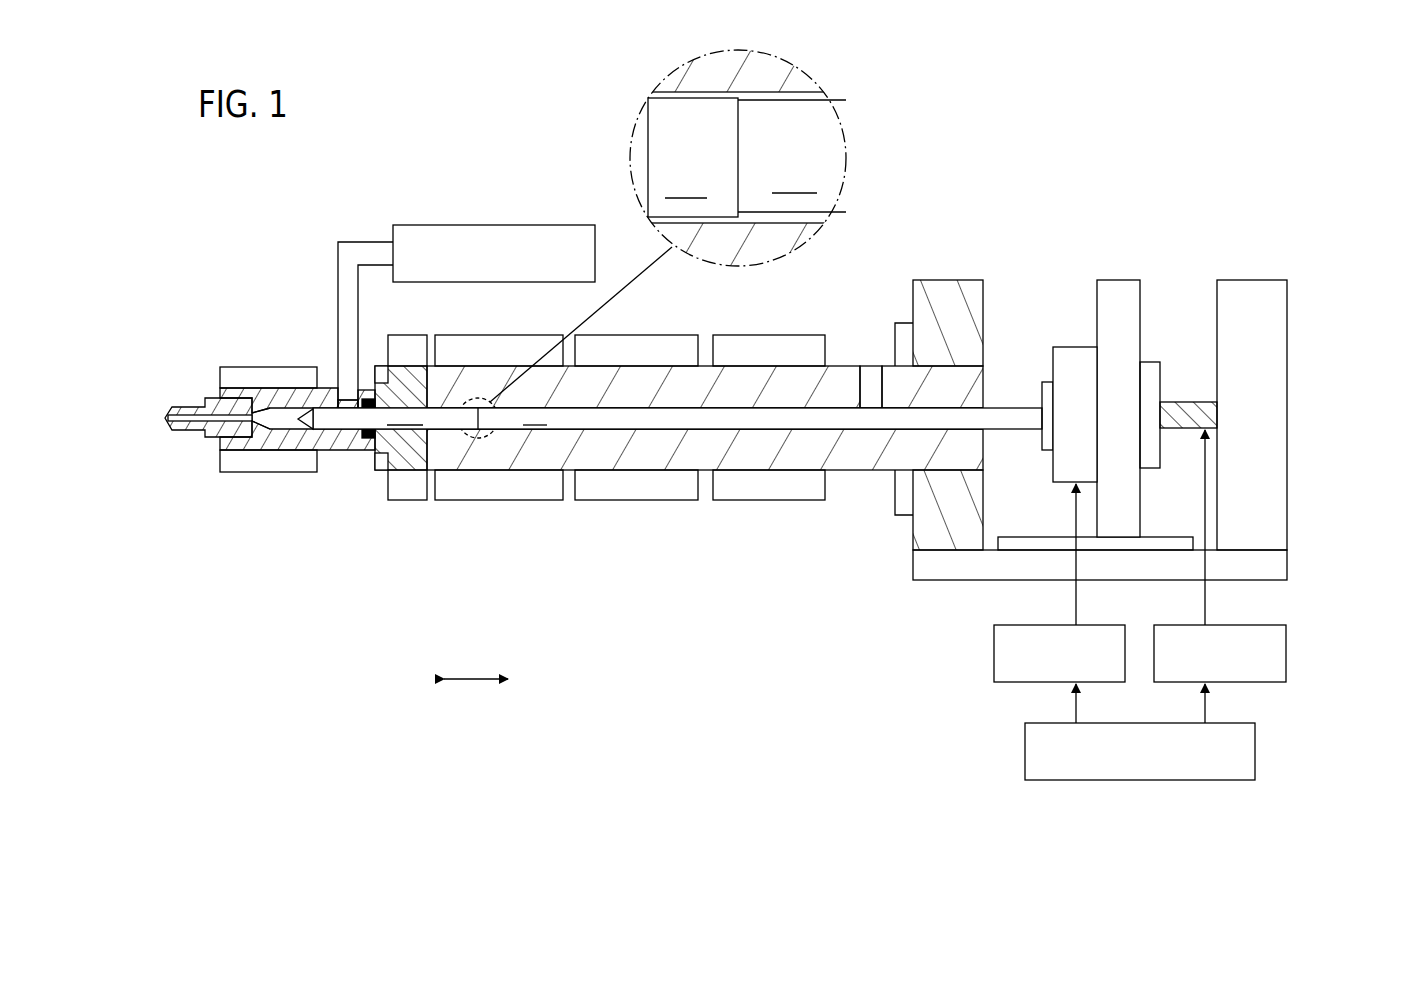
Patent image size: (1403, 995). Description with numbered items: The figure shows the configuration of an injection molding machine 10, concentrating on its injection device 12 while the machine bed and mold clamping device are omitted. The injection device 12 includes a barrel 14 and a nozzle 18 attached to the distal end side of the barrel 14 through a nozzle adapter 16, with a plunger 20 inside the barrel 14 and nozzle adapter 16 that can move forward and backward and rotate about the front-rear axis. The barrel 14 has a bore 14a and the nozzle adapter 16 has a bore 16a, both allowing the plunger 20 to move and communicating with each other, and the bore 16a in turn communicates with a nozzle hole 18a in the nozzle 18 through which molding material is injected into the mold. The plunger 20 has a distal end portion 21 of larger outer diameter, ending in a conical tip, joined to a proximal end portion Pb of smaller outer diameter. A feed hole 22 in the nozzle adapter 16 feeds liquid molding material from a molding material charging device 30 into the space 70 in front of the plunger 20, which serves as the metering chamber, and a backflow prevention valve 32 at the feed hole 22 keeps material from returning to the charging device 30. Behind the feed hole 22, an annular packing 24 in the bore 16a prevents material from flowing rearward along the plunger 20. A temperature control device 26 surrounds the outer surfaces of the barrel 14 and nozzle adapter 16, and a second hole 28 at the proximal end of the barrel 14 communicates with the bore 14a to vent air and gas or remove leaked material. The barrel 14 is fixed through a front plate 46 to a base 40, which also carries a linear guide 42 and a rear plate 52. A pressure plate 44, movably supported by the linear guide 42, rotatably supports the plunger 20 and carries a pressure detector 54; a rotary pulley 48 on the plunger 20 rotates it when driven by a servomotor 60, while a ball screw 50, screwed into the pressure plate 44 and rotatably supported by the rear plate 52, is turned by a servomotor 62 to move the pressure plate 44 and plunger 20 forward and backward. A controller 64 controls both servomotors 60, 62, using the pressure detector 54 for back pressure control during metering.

The injection molding machine 10 is at (273, 191).
The injection device 12 is at (657, 556).
The barrel 14 is at (762, 393).
The bore 14a is at (838, 425).
The nozzle adapter 16 is at (252, 388).
The bore 16a is at (300, 431).
The nozzle 18 is at (182, 434).
The nozzle hole 18a is at (169, 414).
The plunger 20 is at (999, 405).
The distal end portion 21 is at (448, 418).
The proximal end portion Pb is at (660, 415).
The feed hole 22 is at (350, 386).
The annular packing 24 is at (368, 439).
The temperature control device 26 is at (262, 462).
The second hole 28 is at (882, 378).
The molding material charging device 30 is at (418, 225).
The backflow prevention valve 32 is at (341, 409).
The base 40 is at (928, 565).
The linear guide 42 is at (1020, 543).
The pressure plate 44 is at (1115, 293).
The front plate 46 is at (943, 293).
The rotary pulley 48 is at (1069, 357).
The ball screw 50 is at (1183, 410).
The rear plate 52 is at (1252, 293).
The pressure detector 54 is at (1143, 363).
The servomotor 60 is at (994, 653).
The servomotor 62 is at (1286, 651).
The controller 64 is at (1025, 752).
The space 70 is at (287, 418).